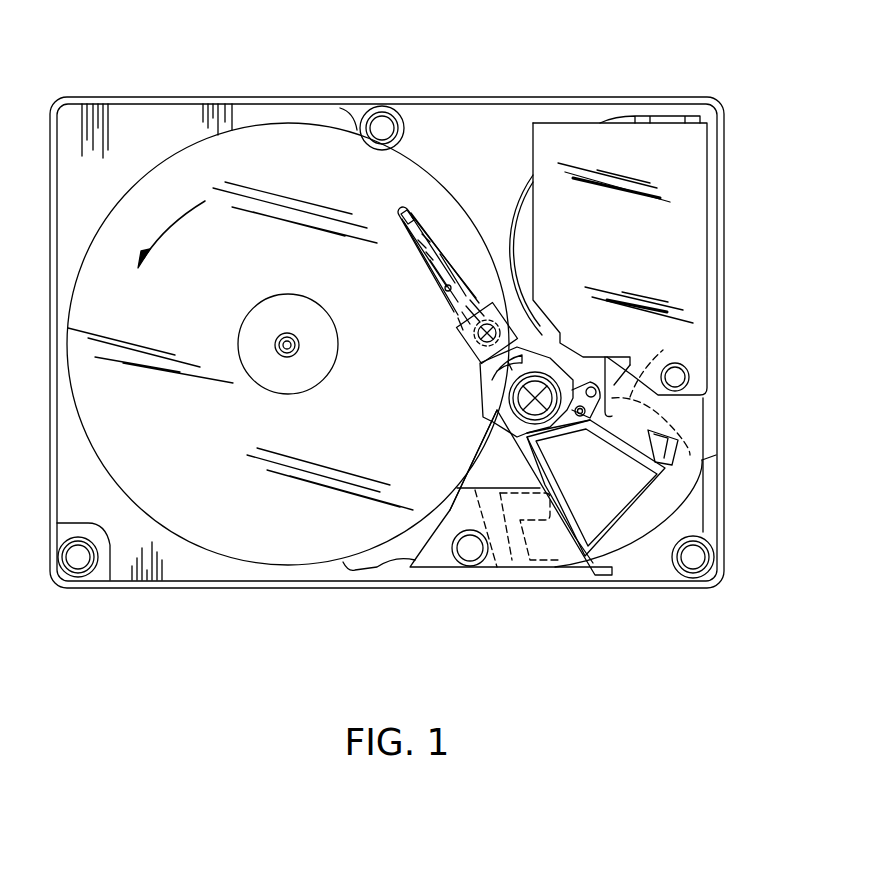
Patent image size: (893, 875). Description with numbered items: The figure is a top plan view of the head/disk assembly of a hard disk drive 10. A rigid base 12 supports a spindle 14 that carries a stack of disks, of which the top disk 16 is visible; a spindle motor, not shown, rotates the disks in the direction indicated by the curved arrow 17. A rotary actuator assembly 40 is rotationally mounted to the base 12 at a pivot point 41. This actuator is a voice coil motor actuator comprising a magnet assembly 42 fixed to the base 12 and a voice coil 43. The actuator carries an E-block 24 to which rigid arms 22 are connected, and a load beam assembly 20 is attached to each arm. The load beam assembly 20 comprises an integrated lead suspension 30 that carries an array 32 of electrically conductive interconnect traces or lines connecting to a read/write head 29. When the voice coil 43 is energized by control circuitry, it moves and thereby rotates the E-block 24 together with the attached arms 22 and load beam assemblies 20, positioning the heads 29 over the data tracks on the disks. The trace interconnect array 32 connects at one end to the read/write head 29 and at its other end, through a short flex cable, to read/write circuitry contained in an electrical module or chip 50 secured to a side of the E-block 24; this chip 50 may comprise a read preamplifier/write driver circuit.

The hard disk drive 10 is at (116, 42).
The rigid base 12 is at (185, 587).
The spindle 14 is at (285, 295).
The top disk 16 is at (411, 160).
The curved arrow 17 is at (172, 227).
The load beam assembly 20 is at (378, 223).
The rigid arms 22 is at (283, 550).
The E-block 24 is at (487, 393).
The read/write head 29 is at (401, 213).
The integrated lead suspension 30 is at (417, 232).
The array of electrically conductive interconnect traces 32 is at (437, 262).
The rotary actuator assembly 40 is at (480, 461).
The pivot point 41 is at (497, 420).
The magnet assembly 42 is at (620, 400).
The voice coil 43 is at (651, 478).
The electrical module or chip 50 is at (578, 362).